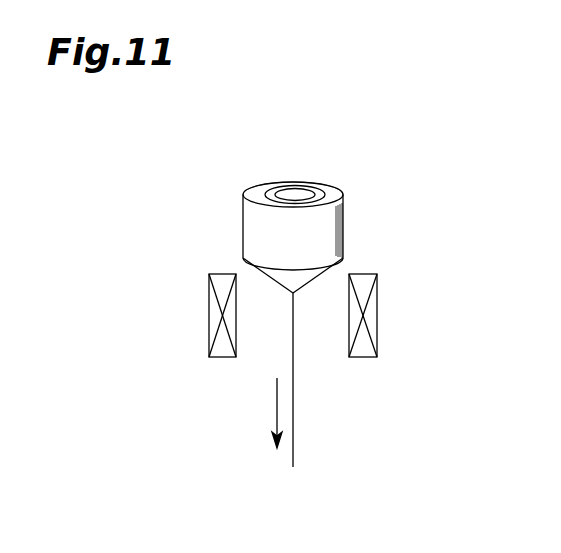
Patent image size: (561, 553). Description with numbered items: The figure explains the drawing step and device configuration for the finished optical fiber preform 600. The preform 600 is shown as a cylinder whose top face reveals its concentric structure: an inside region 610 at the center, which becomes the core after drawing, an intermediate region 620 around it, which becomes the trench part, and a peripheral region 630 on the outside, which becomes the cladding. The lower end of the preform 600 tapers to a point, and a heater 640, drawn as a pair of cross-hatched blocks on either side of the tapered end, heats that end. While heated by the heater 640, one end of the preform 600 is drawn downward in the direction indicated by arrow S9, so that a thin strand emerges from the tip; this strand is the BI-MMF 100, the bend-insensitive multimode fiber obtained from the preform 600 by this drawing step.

The optical fiber preform 600 is at (352, 200).
The inside region 610 is at (292, 190).
The intermediate region 620 is at (323, 190).
The peripheral region 630 is at (258, 190).
The heater 640 is at (209, 313).
The BI-MMF 100 is at (296, 411).
The drawing direction arrow S9 is at (276, 409).